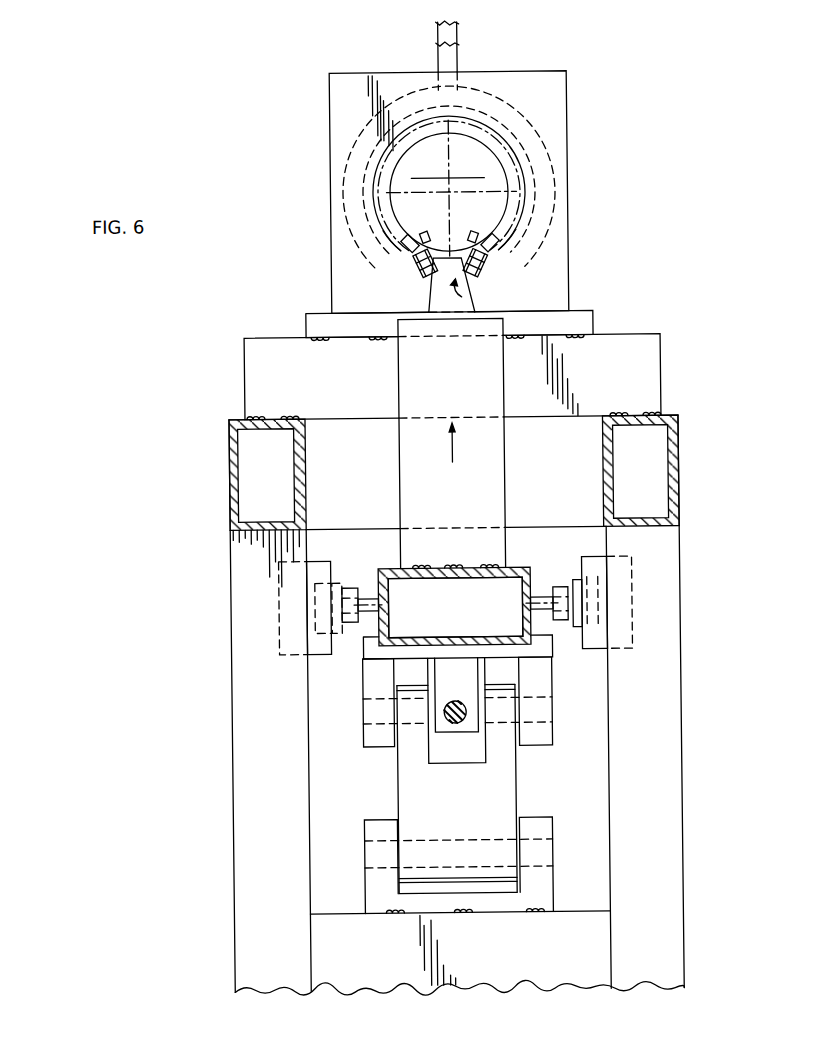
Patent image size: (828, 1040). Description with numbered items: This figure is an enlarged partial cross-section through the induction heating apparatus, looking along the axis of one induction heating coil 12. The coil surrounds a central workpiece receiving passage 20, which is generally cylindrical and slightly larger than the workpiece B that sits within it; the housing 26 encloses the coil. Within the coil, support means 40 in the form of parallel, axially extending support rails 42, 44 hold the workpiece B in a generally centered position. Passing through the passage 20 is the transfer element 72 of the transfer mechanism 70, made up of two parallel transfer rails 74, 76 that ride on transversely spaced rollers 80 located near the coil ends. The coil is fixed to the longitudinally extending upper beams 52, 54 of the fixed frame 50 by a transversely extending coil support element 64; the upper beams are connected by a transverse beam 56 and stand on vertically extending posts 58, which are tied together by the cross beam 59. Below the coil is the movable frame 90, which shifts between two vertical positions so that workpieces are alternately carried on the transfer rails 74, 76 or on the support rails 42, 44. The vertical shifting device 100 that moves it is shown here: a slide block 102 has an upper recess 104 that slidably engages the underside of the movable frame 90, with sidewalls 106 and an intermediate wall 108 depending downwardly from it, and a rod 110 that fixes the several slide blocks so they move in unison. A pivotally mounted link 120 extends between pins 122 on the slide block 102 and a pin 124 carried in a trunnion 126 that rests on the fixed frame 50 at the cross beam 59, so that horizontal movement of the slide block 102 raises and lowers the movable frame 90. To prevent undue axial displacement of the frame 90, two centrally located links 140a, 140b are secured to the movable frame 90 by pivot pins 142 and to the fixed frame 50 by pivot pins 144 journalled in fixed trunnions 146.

The induction heating coil 12 is at (447, 105).
The housing 26 is at (339, 96).
The workpiece B is at (516, 158).
The central workpiece receiving passage 20 is at (521, 202).
The support means 40 is at (499, 248).
The support rail 42 is at (502, 239).
The support rail 44 is at (402, 232).
The transfer rail 74 is at (432, 230).
The transfer rail 76 is at (470, 230).
The roller 80 is at (425, 276).
The transfer element 72 is at (463, 294).
The coil support element 64 is at (633, 341).
The fixed frame 50 is at (681, 631).
The upper beam 52 is at (690, 446).
The upper beam 54 is at (302, 492).
The transverse beam 56 is at (562, 533).
The post 58 is at (299, 826).
The cross beam 59 is at (560, 921).
The movable frame 90 is at (377, 569).
The upper recess 104 is at (466, 636).
The slide block 102 is at (548, 645).
The link 140b is at (348, 587).
The link 140a is at (556, 588).
The pivot pin 142 is at (375, 609).
The pivot pin 144 is at (339, 622).
The trunnion 146 is at (331, 607).
The sidewall 106 is at (371, 742).
The vertical shifting device 100 is at (350, 712).
The transfer mechanism 70 is at (557, 693).
The link 120 is at (509, 801).
The intermediate wall 108 is at (466, 723).
The rod 110 is at (454, 700).
The pin 122 is at (378, 697).
The pin 124 is at (536, 834).
The trunnion 126 is at (545, 877).